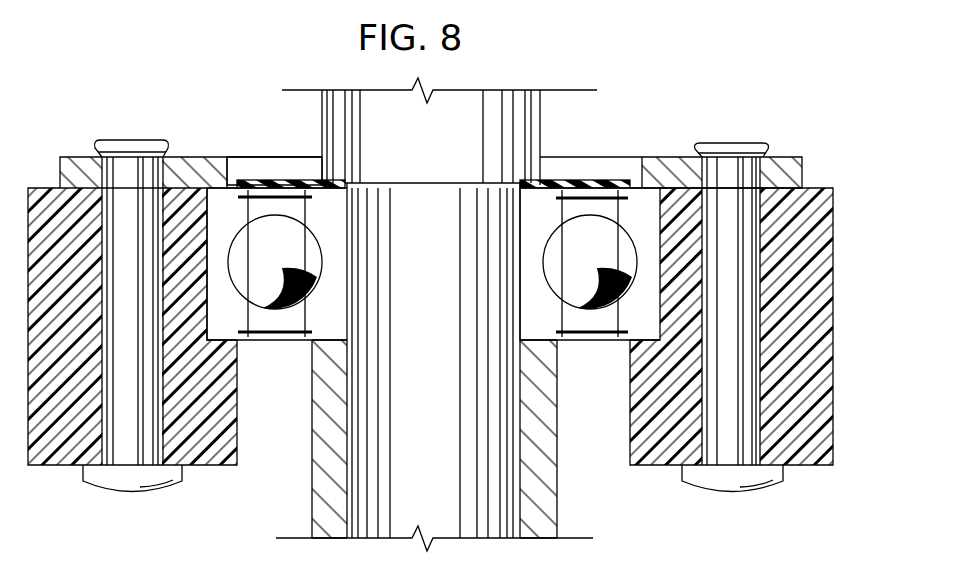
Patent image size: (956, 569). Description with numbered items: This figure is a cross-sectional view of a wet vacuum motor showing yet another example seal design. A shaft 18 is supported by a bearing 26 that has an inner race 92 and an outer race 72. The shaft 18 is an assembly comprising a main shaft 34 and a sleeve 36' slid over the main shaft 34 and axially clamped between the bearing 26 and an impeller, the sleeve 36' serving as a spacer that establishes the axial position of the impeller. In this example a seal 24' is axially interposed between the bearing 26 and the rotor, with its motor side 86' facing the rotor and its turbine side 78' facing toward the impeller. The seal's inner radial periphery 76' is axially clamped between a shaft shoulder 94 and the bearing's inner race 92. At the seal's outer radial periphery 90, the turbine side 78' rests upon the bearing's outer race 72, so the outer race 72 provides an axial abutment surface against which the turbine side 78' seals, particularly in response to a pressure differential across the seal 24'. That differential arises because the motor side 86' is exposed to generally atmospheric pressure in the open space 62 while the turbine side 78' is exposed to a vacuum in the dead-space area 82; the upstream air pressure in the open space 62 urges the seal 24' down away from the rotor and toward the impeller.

The shaft 18 is at (541, 125).
The seal 24' is at (593, 146).
The bearing 26 is at (268, 341).
The main shaft 34 is at (312, 471).
The sleeve 36' is at (258, 439).
The open space 62 is at (283, 145).
The outer race 72 is at (205, 243).
The inner radial periphery 76' is at (433, 232).
The turbine side 78' is at (275, 262).
The dead-space area 82 is at (578, 392).
The motor side 86' is at (291, 150).
The outer radial periphery 90 is at (232, 186).
The inner race 92 is at (330, 305).
The shaft shoulder 94 is at (435, 193).